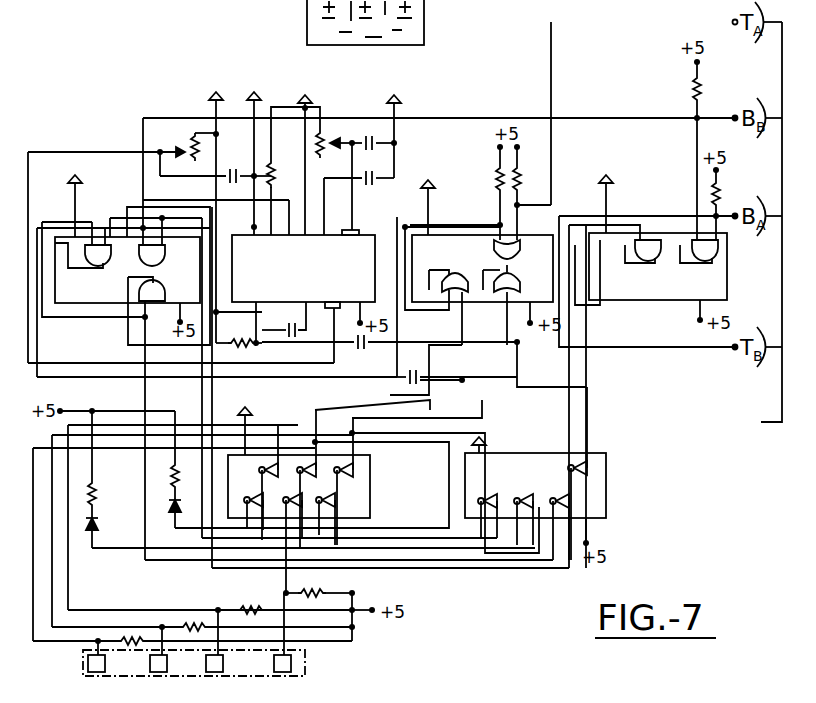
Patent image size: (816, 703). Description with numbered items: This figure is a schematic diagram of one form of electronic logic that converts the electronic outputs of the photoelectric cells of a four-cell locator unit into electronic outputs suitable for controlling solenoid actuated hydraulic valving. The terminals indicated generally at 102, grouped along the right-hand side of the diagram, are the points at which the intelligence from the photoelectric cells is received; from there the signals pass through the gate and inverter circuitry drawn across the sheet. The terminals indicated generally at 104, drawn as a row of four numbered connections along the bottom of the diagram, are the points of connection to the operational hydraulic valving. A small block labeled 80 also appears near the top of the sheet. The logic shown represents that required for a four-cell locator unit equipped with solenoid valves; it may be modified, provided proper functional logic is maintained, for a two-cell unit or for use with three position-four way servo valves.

The keypad 80 is at (307, 13).
The terminals 102 is at (750, 229).
The terminals 104 is at (313, 660).